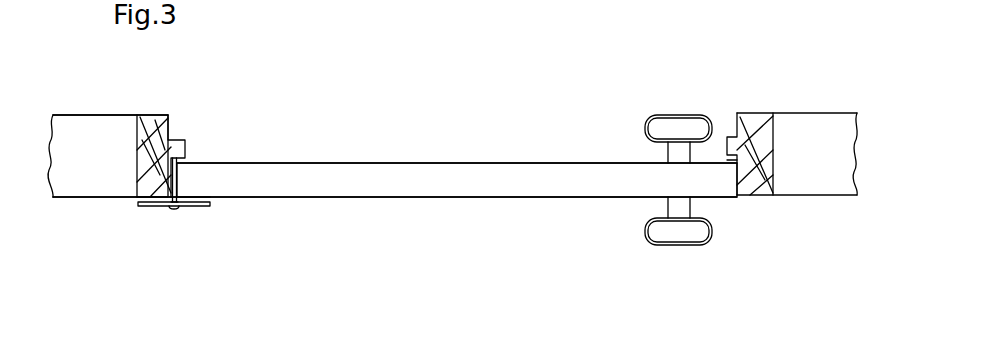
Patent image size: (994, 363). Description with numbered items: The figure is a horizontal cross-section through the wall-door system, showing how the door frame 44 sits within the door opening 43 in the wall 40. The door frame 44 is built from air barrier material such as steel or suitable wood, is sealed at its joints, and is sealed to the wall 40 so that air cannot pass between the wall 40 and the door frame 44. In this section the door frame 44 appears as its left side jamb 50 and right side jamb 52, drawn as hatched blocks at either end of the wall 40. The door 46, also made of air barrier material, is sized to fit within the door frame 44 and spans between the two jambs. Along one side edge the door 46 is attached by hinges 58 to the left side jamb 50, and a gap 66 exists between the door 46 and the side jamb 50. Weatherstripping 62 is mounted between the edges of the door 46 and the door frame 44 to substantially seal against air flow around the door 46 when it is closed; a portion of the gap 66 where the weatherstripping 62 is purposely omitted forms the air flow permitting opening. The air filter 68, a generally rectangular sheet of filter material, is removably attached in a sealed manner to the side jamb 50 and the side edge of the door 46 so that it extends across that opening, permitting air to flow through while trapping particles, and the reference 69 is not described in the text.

The wall 40 is at (55, 200).
The door opening 43 is at (333, 147).
The door frame 44 is at (118, 141).
The door 46 is at (383, 188).
The left side jamb 50 is at (137, 166).
The right side jamb 52 is at (771, 185).
The hinges 58 is at (175, 207).
The weatherstripping 62 is at (185, 157).
The gap 66 is at (178, 183).
The air filter 68 is at (155, 207).
The joint gap 69 is at (140, 194).